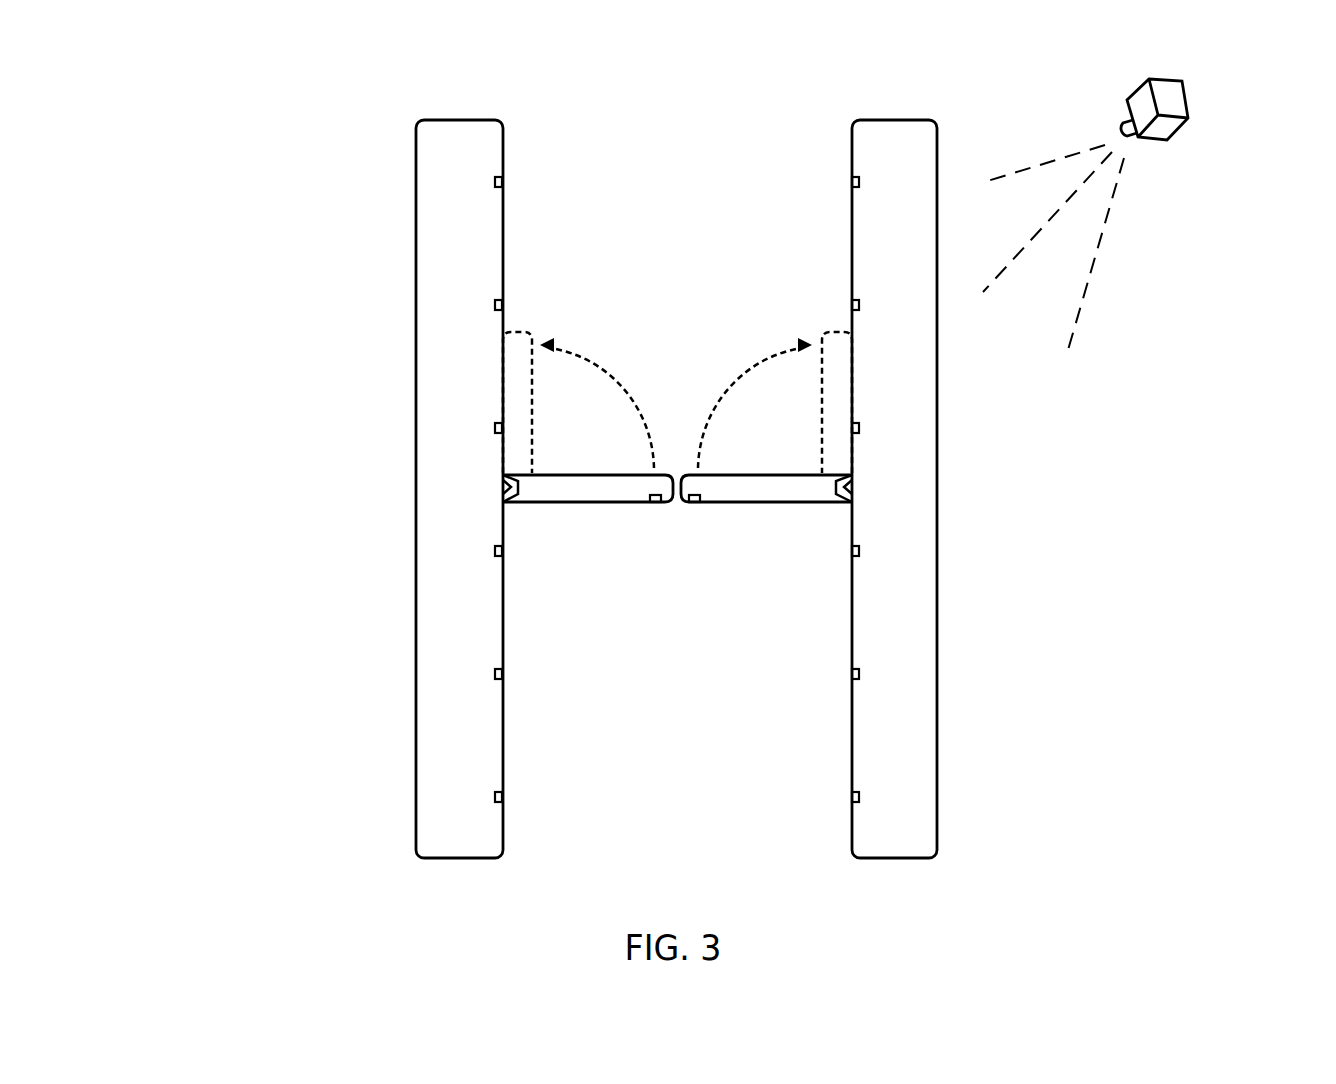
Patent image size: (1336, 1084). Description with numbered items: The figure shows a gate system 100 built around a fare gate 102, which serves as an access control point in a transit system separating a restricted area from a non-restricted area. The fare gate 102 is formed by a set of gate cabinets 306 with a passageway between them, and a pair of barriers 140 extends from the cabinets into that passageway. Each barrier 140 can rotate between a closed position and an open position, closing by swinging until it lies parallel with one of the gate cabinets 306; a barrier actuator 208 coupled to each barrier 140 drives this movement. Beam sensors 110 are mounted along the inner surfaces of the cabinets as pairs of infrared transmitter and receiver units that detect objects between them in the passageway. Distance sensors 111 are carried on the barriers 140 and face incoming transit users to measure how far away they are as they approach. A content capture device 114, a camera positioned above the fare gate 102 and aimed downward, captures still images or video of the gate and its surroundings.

The gate system 100 is at (274, 845).
The fare gate 102 is at (416, 93).
The gate cabinets 306 is at (432, 215).
The beam sensors 110 is at (858, 678).
The barriers 140 is at (543, 498).
The barrier actuator 208 is at (508, 486).
The distance sensors 111 is at (697, 503).
The content capture device 114 is at (1155, 145).